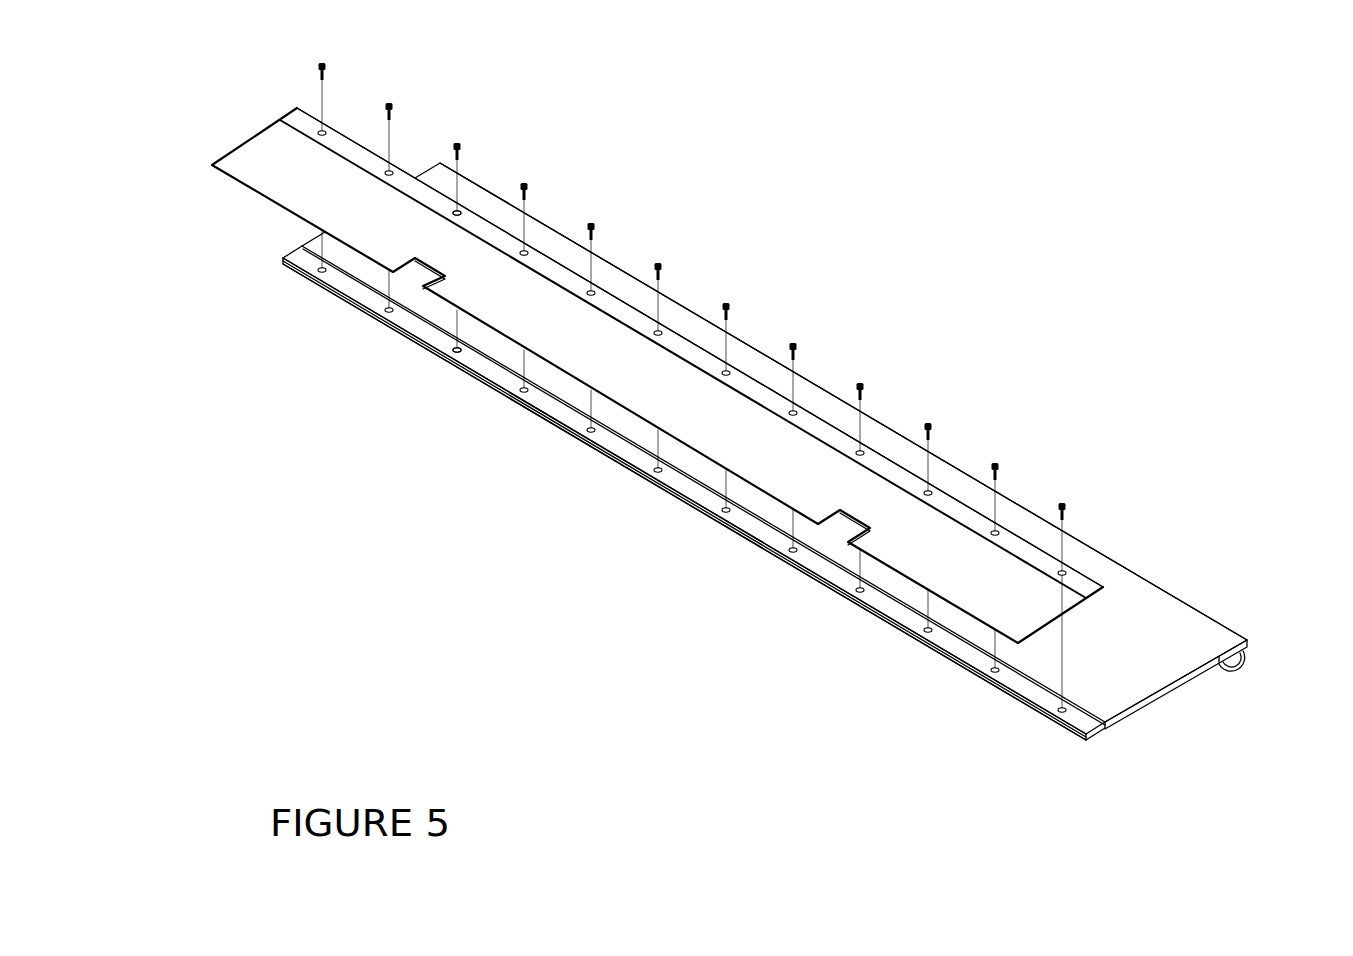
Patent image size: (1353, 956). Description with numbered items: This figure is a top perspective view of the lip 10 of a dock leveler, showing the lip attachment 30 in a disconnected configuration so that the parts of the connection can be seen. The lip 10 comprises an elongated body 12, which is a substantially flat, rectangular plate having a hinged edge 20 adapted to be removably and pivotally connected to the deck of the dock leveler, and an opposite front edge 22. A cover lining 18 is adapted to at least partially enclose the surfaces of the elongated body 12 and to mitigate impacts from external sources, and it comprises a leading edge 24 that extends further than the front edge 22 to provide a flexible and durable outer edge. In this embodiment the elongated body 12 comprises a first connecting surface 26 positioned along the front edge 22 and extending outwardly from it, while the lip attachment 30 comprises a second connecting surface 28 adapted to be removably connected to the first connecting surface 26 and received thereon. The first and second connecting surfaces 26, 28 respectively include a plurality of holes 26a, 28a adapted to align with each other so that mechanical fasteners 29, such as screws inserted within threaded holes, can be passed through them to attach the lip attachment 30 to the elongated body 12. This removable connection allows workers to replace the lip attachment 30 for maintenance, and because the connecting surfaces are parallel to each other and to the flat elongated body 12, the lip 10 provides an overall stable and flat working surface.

The lip 10 is at (1060, 230).
The elongated body 12 is at (1150, 605).
The cover lining 18 is at (680, 410).
The hinged edge 20 is at (1208, 594).
The front edge 22 is at (548, 432).
The leading edge 24 is at (985, 598).
The first connecting surface 26 is at (355, 290).
The holes 26a is at (456, 358).
The second connecting surface 28 is at (305, 118).
The holes 28a is at (463, 211).
The mechanical fasteners 29 is at (790, 340).
The lip attachment 30 is at (357, 125).